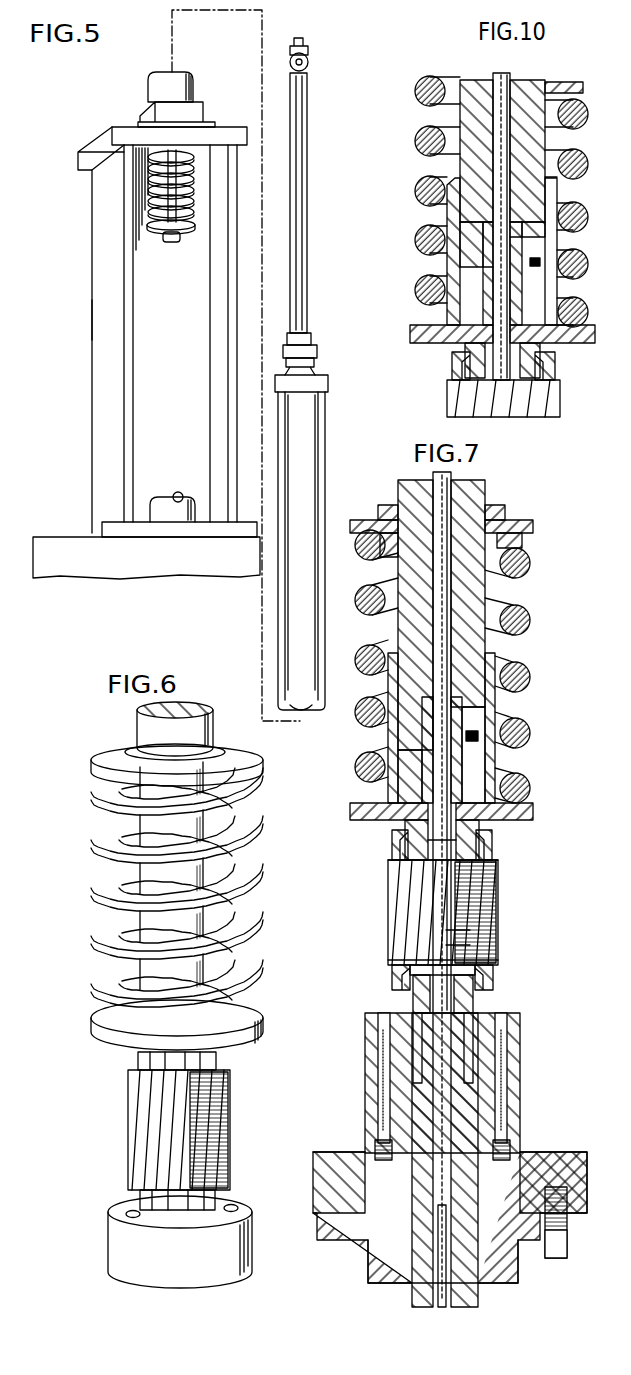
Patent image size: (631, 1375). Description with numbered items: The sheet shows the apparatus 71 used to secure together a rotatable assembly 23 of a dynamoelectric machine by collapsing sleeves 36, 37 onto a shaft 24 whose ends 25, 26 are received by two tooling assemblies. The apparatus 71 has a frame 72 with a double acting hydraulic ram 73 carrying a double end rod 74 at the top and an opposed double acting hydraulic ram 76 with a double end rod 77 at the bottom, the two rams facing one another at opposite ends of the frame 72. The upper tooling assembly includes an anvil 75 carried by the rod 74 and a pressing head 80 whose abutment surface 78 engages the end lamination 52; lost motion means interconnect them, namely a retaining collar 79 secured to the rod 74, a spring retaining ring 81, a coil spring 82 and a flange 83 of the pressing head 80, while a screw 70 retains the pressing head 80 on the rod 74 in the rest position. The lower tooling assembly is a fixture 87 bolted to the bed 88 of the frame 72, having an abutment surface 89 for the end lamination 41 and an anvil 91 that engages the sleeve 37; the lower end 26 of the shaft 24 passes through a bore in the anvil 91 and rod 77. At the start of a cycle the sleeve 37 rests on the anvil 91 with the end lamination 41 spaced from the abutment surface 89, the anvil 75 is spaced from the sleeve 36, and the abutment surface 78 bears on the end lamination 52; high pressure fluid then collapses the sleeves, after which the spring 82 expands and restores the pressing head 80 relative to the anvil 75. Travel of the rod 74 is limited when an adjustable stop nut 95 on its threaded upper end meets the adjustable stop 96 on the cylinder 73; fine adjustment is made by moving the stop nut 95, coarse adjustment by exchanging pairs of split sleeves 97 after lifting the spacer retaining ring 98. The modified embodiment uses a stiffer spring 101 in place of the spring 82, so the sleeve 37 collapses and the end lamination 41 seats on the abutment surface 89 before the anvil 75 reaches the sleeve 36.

In FIG. 7, the rotatable assembly 23 is at (500, 925).
In FIG. 6, the rotatable assembly 23 is at (124, 1128).
In FIG. 10, the shaft 24 is at (506, 78).
In FIG. 7, the shaft 24 is at (448, 480).
In FIG. 7, the end of shaft 25 is at (445, 594).
In FIG. 7, the lower end of shaft 26 is at (438, 1310).
In FIG. 10, the sleeve 36 is at (540, 350).
In FIG. 7, the sleeve 36 is at (410, 840).
In FIG. 7, the sleeve 37 is at (460, 958).
In FIG. 7, the end lamination 41 is at (392, 965).
In FIG. 7, the end lamination 52 is at (498, 862).
In FIG. 10, the screw 70 is at (560, 258).
In FIG. 7, the screw 70 is at (478, 738).
In FIG. 5, the apparatus 71 is at (90, 272).
In FIG. 5, the frame 72 is at (100, 360).
In FIG. 5, the double acting hydraulic ram 73 is at (150, 88).
In FIG. 5, the double end rod 74 is at (178, 172).
In FIG. 10, the double end rod 74 is at (530, 238).
In FIG. 7, the double end rod 74 is at (470, 640).
In FIG. 10, the anvil 75 is at (500, 290).
In FIG. 7, the anvil 75 is at (462, 770).
In FIG. 7, the double acting hydraulic ram 76 is at (518, 1270).
In FIG. 5, the double end rod 77 is at (184, 234).
In FIG. 7, the double end rod 77 is at (470, 1300).
In FIG. 6, the double end rod 77 is at (160, 856).
In FIG. 10, the abutment surface 78 is at (560, 400).
In FIG. 7, the abutment surface 78 is at (412, 860).
In FIG. 7, the retaining collar 79 is at (505, 510).
In FIG. 6, the retaining collar 79 is at (138, 742).
In FIG. 10, the pressing head 80 is at (470, 345).
In FIG. 7, the pressing head 80 is at (482, 820).
In FIG. 7, the spring retaining ring 81 is at (533, 527).
In FIG. 6, the spring retaining ring 81 is at (96, 767).
In FIG. 5, the coil spring 82 is at (150, 186).
In FIG. 7, the coil spring 82 is at (530, 566).
In FIG. 6, the coil spring 82 is at (100, 827).
In FIG. 10, the flange 83 is at (595, 328).
In FIG. 7, the flange 83 is at (533, 808).
In FIG. 6, the flange 83 is at (262, 1030).
In FIG. 5, the fixture 87 is at (164, 500).
In FIG. 7, the fixture 87 is at (515, 1058).
In FIG. 6, the fixture 87 is at (115, 1245).
In FIG. 5, the bed 88 is at (100, 532).
In FIG. 7, the bed 88 is at (555, 1160).
In FIG. 7, the abutment surface 89 is at (493, 970).
In FIG. 7, the anvil 91 is at (473, 1008).
In FIG. 5, the adjustable stop nut 95 is at (310, 56).
In FIG. 5, the adjustable stop 96 is at (322, 333).
In FIG. 5, the split sleeves 97 is at (318, 370).
In FIG. 5, the spacer retaining ring 98 is at (318, 350).
In FIG. 10, the spring 101 is at (588, 160).